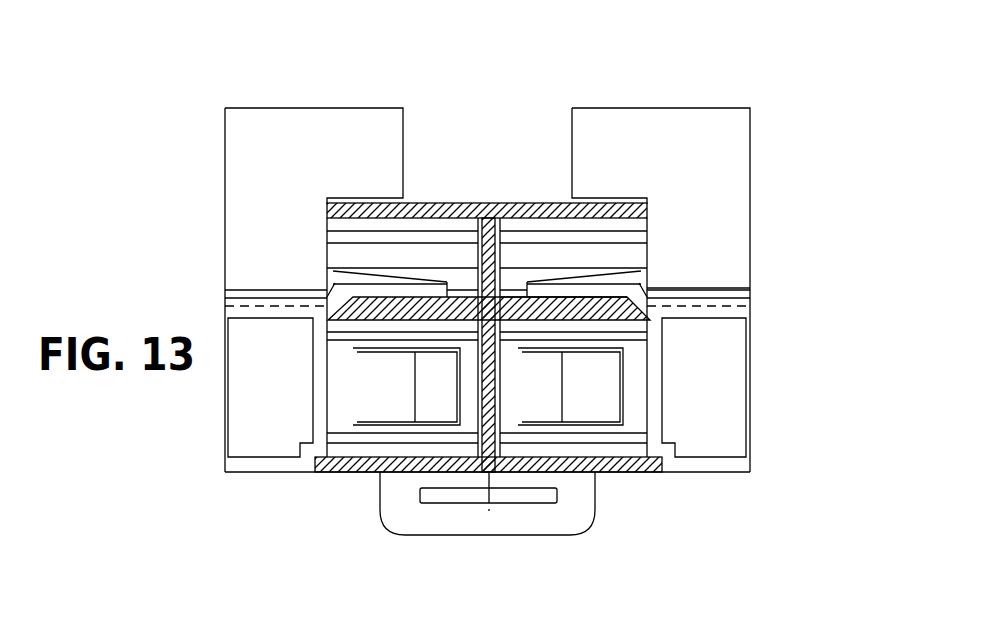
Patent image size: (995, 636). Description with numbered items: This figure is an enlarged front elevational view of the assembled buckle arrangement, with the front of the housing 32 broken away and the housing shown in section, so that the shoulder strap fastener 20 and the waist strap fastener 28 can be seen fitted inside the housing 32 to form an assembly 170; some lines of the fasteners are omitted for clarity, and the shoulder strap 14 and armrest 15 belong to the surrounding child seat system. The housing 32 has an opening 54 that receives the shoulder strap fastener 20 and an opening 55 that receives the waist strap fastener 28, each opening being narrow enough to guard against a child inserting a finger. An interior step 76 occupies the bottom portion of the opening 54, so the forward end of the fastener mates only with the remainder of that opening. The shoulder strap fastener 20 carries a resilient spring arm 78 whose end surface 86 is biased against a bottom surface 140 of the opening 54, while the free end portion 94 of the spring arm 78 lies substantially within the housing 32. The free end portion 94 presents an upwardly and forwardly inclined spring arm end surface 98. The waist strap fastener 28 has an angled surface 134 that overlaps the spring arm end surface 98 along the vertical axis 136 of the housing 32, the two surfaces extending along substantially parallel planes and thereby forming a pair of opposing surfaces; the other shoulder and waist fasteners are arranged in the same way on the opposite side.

The shoulder strap 14 is at (345, 413).
The armrest 15 is at (856, 90).
The shoulder strap fastener 20 is at (750, 149).
The waist strap fastener 28 is at (750, 423).
The housing 32 is at (421, 196).
The opening 54 is at (663, 223).
The opening 55 is at (607, 392).
The interior step 76 is at (523, 307).
The spring arm 78 is at (593, 300).
The end surface 86 is at (648, 318).
The free end portion 94 is at (650, 273).
The spring arm end surface 98 is at (652, 281).
The angled surface 134 is at (655, 302).
The vertical axis 136 is at (488, 204).
The bottom surface 140 is at (568, 300).
The assembly 170 is at (192, 113).